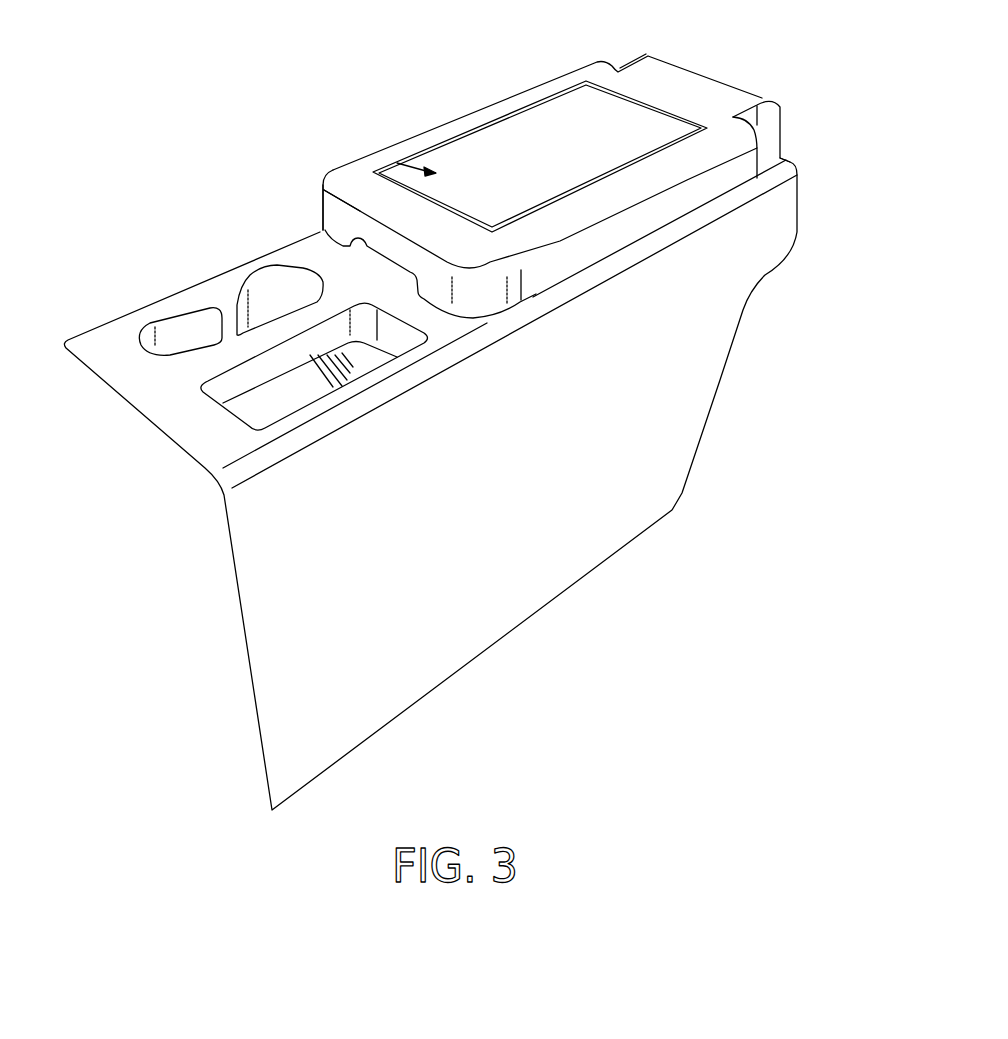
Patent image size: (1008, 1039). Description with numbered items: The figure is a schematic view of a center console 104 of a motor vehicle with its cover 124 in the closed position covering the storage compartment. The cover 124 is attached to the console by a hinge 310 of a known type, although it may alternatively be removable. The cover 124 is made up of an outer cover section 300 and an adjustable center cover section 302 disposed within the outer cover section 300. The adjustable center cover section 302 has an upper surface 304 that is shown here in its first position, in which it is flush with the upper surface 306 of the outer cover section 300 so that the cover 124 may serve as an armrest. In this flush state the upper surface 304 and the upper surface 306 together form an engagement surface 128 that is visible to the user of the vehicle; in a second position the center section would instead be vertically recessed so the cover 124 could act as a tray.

The center console 104 is at (678, 578).
The cover 124 is at (328, 212).
The engagement surface 128 is at (397, 163).
The outer cover section 300 is at (423, 134).
The adjustable center cover section 302 is at (547, 153).
The upper surface 304 is at (643, 125).
The upper surface 306 is at (623, 190).
The hinge 310 is at (770, 133).